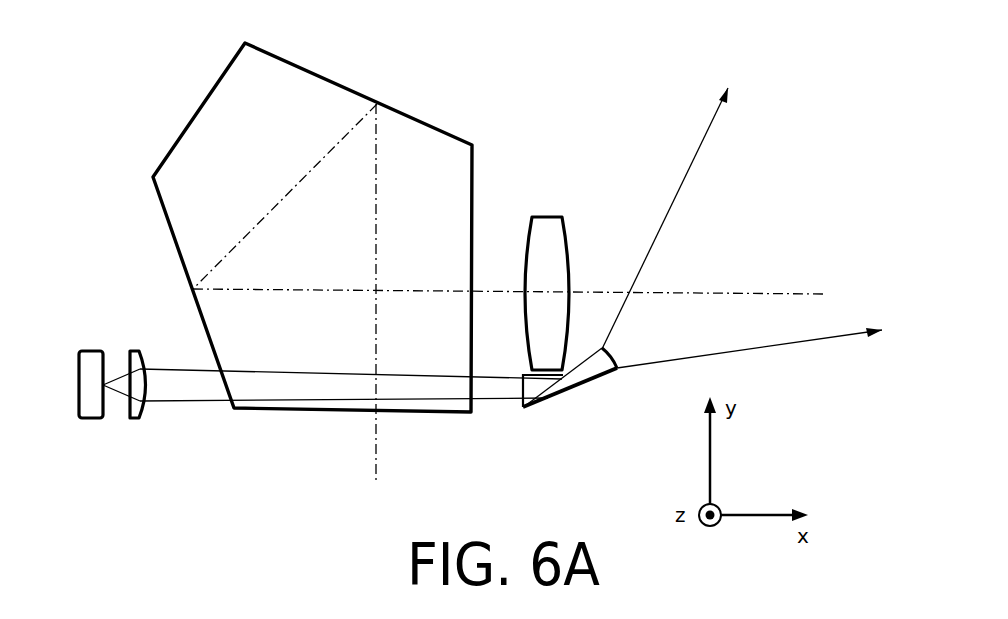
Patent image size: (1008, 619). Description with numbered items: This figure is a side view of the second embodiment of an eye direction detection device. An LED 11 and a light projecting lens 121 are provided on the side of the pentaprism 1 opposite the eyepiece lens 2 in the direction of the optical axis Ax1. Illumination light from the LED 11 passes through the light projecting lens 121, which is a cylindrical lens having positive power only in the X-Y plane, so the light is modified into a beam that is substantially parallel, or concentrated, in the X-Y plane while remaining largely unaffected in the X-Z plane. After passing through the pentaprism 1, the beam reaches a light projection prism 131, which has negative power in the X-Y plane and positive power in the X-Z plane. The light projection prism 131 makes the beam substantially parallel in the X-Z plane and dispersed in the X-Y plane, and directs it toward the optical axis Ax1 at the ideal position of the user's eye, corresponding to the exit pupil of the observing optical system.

The pentaprism 1 is at (330, 80).
The eyepiece lens 2 is at (550, 215).
The LED 11 is at (79, 386).
The light projecting lens 121 is at (137, 350).
The light projection prism 131 is at (572, 395).
The optical axis Ax1 is at (763, 288).